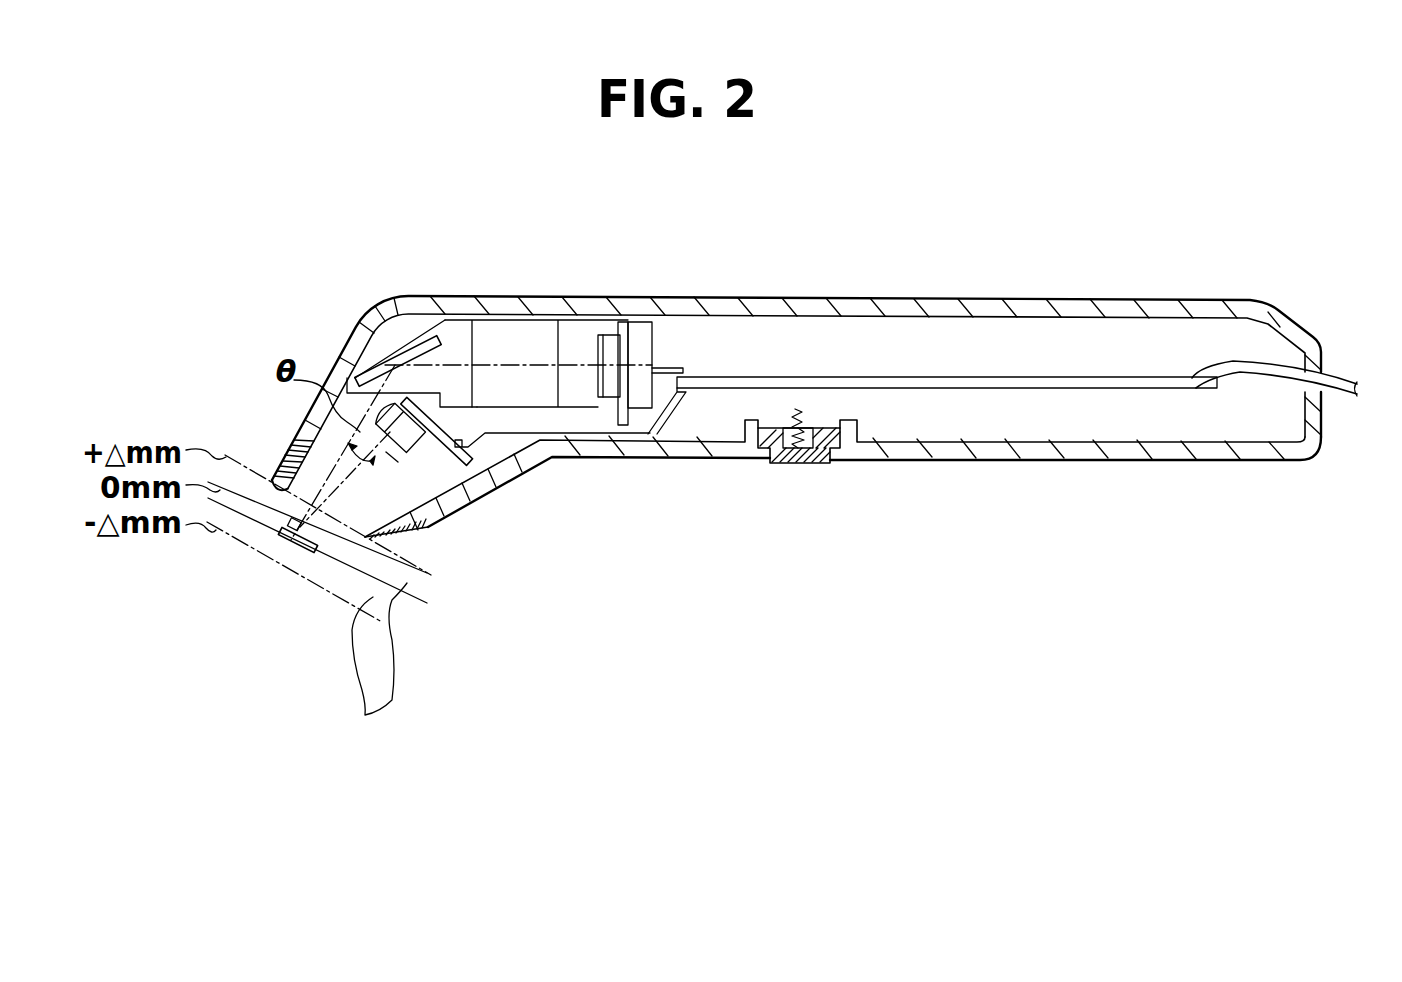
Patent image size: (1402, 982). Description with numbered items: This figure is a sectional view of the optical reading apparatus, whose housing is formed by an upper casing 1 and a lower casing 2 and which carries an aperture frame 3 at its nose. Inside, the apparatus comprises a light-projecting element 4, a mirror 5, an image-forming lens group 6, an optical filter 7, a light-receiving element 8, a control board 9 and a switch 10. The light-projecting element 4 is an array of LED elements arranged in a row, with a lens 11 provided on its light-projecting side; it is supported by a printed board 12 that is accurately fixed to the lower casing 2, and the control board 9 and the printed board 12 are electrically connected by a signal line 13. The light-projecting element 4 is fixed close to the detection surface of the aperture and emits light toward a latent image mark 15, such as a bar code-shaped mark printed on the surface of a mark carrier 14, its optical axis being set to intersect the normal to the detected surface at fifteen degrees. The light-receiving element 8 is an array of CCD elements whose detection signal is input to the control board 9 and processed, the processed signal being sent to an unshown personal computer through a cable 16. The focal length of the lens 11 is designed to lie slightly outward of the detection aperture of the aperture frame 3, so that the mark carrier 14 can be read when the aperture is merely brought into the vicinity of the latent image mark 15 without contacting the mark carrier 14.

The upper casing 1 is at (967, 300).
The lower casing 2 is at (1000, 458).
The aperture frame 3 is at (273, 448).
The light-projecting element 4 is at (417, 444).
The mirror 5 is at (407, 340).
The image-forming lens group 6 is at (483, 337).
The optical filter 7 is at (598, 338).
The light-receiving element 8 is at (613, 337).
The control board 9 is at (1113, 377).
The switch 10 is at (815, 463).
The lens 11 is at (393, 455).
The printed board 12 is at (465, 466).
The signal line 13 is at (508, 442).
The mark carrier 14 is at (377, 671).
The latent image mark 15 is at (313, 553).
The cable 16 is at (1343, 398).